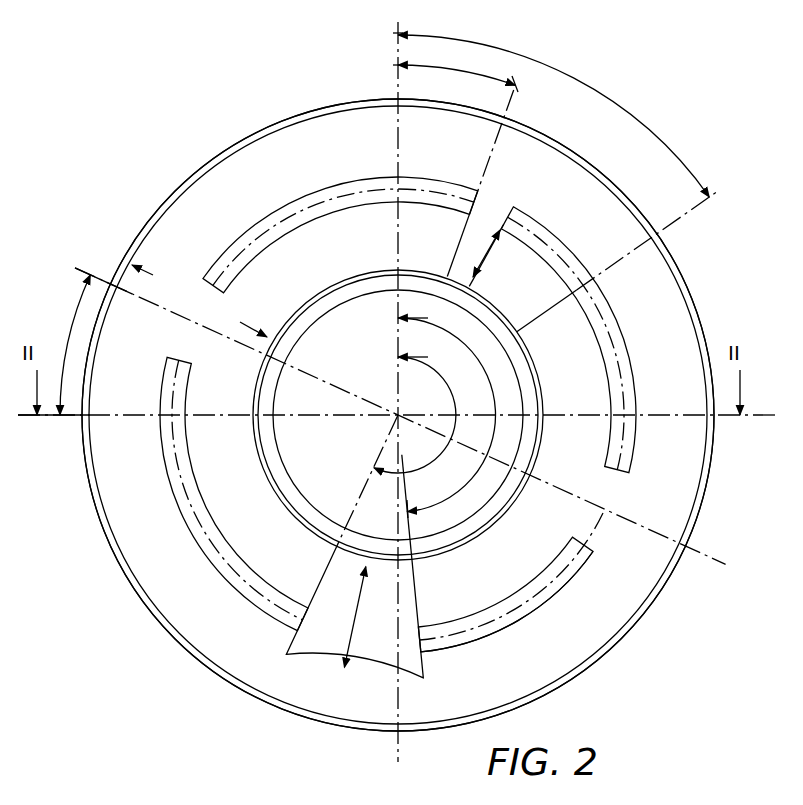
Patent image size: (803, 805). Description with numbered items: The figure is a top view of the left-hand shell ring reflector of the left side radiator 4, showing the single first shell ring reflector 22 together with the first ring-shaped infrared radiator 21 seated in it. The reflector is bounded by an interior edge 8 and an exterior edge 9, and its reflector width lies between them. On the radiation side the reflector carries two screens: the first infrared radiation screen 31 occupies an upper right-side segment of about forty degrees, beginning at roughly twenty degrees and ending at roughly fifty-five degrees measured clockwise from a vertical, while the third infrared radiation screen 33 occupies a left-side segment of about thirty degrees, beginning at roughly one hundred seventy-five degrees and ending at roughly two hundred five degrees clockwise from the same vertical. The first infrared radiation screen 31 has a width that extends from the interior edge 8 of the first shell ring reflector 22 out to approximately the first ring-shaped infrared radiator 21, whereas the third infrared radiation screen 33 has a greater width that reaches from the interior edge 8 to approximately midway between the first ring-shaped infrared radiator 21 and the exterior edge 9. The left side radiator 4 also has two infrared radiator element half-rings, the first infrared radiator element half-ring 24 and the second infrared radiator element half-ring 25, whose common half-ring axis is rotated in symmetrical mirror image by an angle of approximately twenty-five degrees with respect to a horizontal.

The left side radiator 4 is at (186, 78).
The interior edge 8 is at (678, 543).
The exterior edge 9 is at (170, 610).
The first ring-shaped infrared radiator 21 is at (543, 600).
The first shell ring reflector 22 is at (612, 595).
The first infrared radiator element half-ring 24 is at (243, 241).
The second infrared radiator element half-ring 25 is at (195, 527).
The first infrared radiation screen 31 is at (552, 293).
The third infrared radiation screen 33 is at (382, 648).